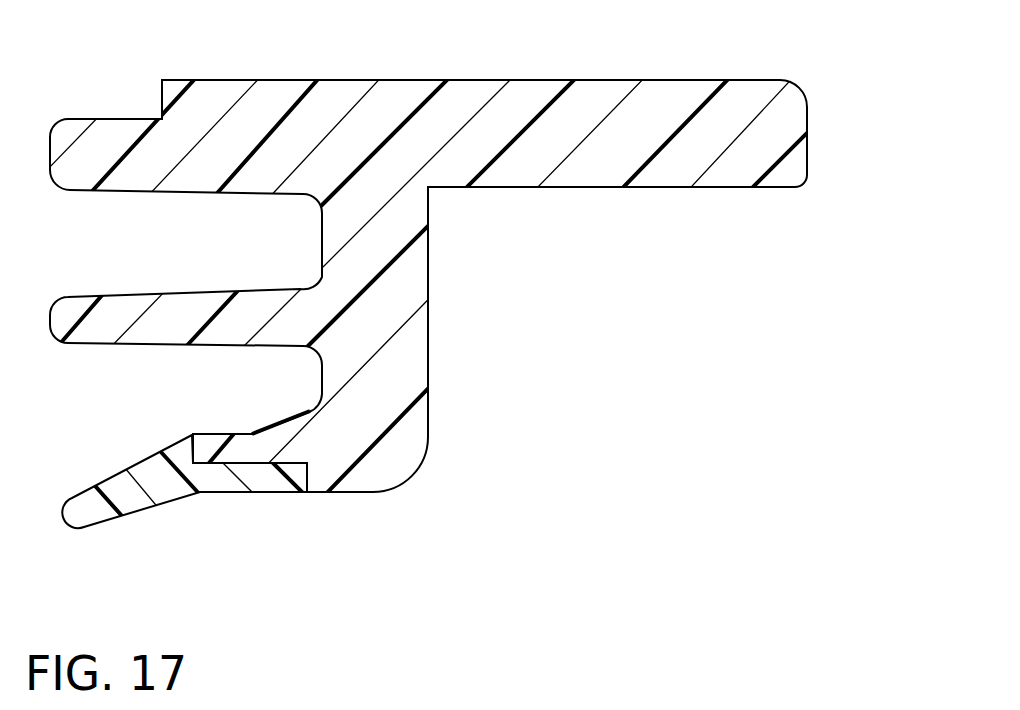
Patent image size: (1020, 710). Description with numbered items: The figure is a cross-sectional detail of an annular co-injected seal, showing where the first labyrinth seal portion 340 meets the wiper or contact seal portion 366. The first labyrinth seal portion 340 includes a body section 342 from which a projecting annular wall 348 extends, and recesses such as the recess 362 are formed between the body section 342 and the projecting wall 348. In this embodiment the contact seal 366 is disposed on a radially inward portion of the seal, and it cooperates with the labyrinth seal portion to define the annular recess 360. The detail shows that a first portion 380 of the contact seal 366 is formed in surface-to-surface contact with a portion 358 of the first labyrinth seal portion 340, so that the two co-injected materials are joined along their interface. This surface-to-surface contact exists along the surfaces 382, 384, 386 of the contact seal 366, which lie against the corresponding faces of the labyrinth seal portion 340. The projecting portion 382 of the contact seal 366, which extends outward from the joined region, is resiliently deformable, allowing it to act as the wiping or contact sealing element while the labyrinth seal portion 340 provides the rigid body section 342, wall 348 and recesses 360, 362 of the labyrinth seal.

The first labyrinth seal portion 340 is at (816, 86).
The body section 342 is at (571, 80).
The projecting annular wall 348 is at (120, 308).
The portion of the first labyrinth seal portion 358 is at (214, 470).
The annular recess 360 is at (303, 382).
The recess 362 is at (308, 248).
The contact seal portion 366 is at (105, 531).
The first portion of the contact seal 380 is at (273, 487).
The projecting portion 382 is at (112, 486).
The surface of the contact seal 384 is at (233, 463).
The surface of the contact seal 386 is at (195, 450).